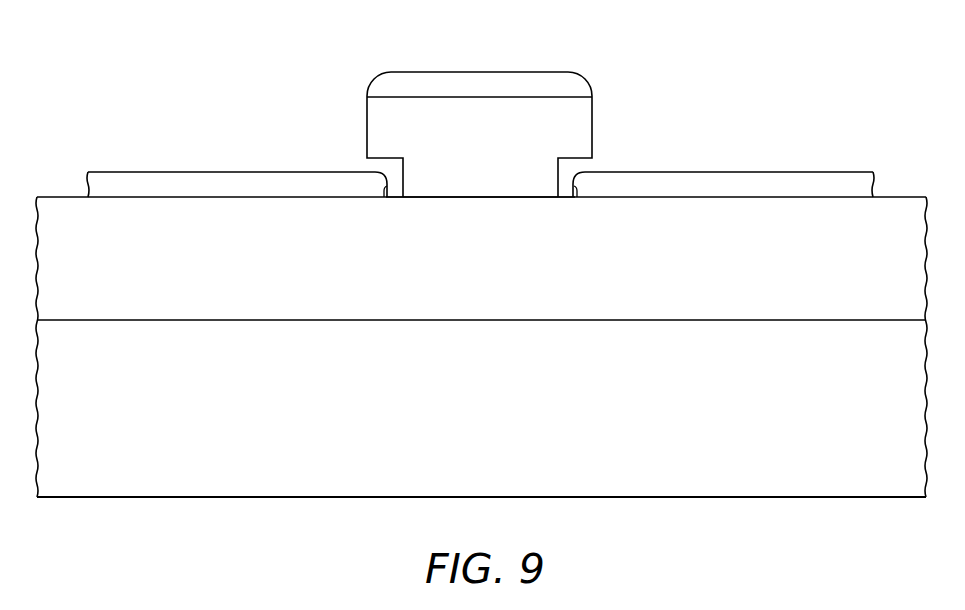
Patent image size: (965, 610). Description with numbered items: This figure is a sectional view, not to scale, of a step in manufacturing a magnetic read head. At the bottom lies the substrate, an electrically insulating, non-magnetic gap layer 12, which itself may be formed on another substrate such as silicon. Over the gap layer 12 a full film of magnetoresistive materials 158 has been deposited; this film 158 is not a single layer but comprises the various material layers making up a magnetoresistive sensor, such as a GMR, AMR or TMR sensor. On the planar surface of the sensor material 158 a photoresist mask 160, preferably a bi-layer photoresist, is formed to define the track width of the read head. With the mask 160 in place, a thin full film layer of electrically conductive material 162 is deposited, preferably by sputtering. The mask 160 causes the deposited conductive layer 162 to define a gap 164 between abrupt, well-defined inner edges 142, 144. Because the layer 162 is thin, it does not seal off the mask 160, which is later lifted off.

The gap layer 12 is at (595, 447).
The full film of magnetoresistive materials 158 is at (603, 300).
The photoresist mask 160 is at (499, 147).
The layer of electrically conductive material 162 is at (533, 72).
The inner edge 142 is at (388, 197).
The inner edge 144 is at (573, 197).
The gap 164 is at (479, 197).